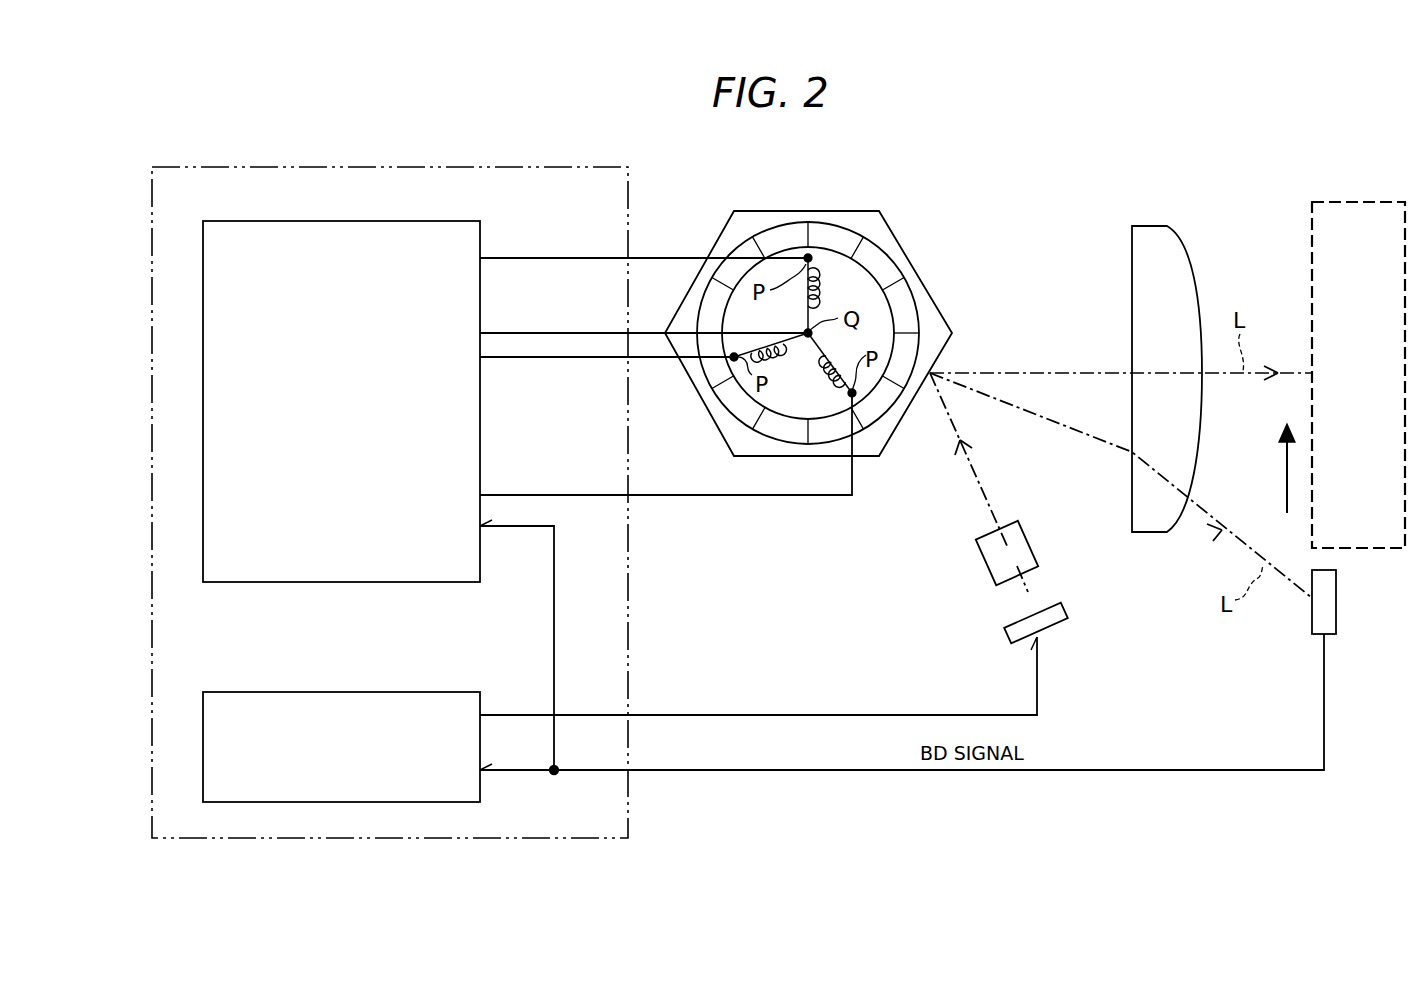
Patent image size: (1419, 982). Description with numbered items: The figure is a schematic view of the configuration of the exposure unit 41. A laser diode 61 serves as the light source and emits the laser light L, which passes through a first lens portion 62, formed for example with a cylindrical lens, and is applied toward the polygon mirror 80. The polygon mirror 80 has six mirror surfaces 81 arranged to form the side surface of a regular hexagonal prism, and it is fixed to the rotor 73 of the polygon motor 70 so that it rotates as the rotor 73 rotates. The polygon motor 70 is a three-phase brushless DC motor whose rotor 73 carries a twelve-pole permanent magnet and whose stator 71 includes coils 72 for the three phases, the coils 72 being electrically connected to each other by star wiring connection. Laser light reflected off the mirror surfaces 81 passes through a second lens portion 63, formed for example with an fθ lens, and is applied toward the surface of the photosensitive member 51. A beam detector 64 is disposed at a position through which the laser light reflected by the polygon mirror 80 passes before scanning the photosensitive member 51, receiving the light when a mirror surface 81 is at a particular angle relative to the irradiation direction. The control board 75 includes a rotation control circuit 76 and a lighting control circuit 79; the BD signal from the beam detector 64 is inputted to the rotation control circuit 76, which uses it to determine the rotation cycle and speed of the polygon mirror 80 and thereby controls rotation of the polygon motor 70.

The exposure unit 41 is at (1038, 203).
The photosensitive member 51 is at (1357, 202).
The laser diode 61 is at (1003, 636).
The first lens portion 62 is at (977, 562).
The second lens portion 63 is at (1153, 232).
The beam detector 64 is at (1336, 598).
The polygon motor 70 is at (757, 214).
The stator 71 is at (812, 264).
The coils 72 is at (828, 372).
The rotor 73 is at (918, 311).
The control board 75 is at (398, 167).
The rotation control circuit 76 is at (418, 221).
The lighting control circuit 79 is at (418, 692).
The polygon mirror 80 is at (822, 214).
The mirror surfaces 81 is at (896, 432).